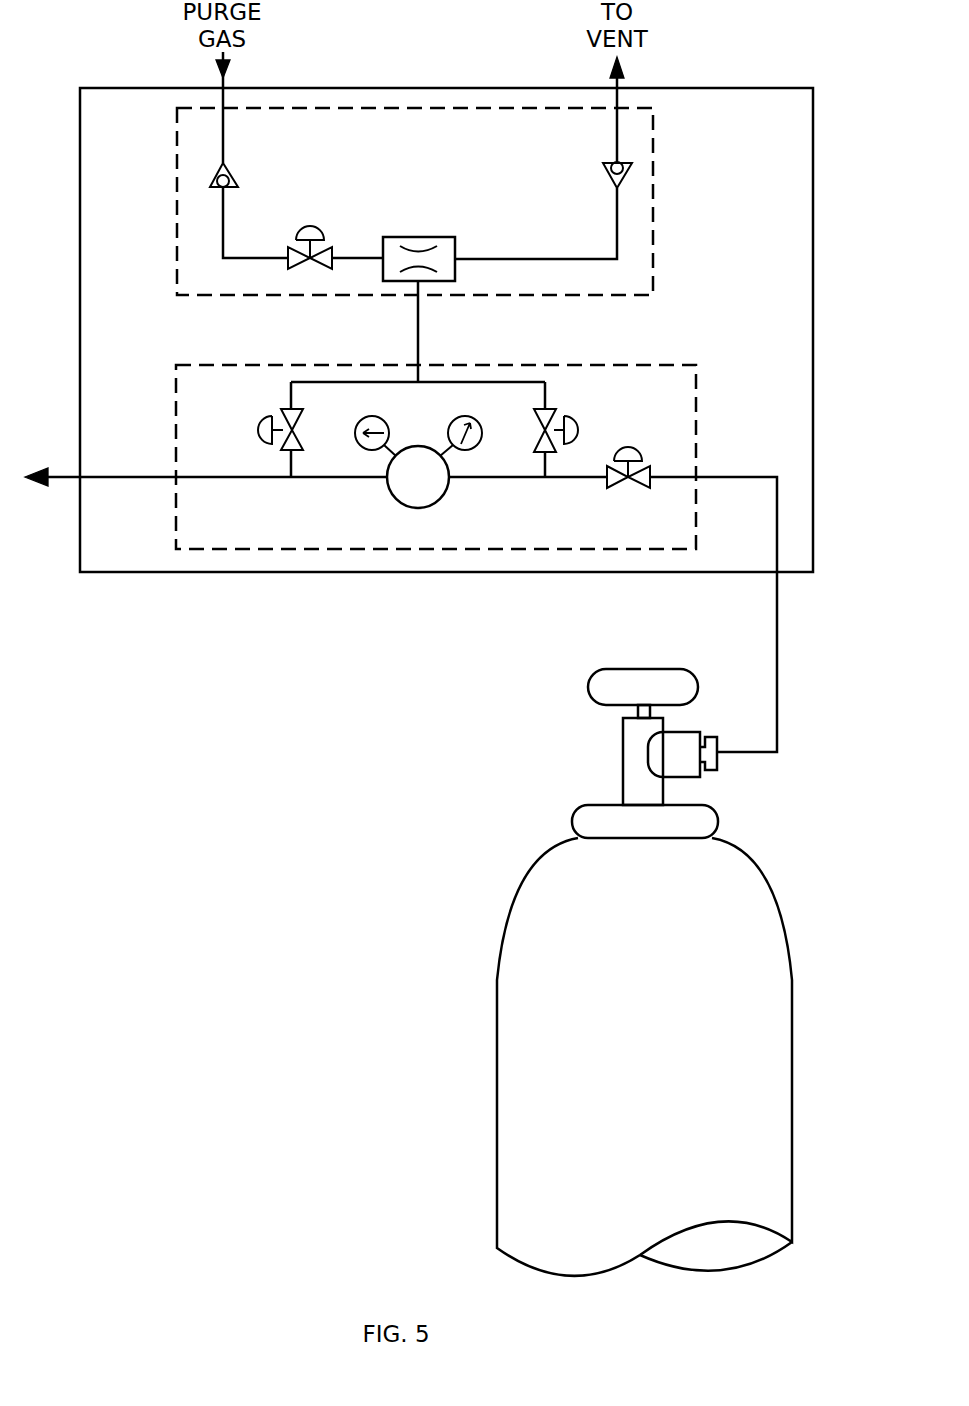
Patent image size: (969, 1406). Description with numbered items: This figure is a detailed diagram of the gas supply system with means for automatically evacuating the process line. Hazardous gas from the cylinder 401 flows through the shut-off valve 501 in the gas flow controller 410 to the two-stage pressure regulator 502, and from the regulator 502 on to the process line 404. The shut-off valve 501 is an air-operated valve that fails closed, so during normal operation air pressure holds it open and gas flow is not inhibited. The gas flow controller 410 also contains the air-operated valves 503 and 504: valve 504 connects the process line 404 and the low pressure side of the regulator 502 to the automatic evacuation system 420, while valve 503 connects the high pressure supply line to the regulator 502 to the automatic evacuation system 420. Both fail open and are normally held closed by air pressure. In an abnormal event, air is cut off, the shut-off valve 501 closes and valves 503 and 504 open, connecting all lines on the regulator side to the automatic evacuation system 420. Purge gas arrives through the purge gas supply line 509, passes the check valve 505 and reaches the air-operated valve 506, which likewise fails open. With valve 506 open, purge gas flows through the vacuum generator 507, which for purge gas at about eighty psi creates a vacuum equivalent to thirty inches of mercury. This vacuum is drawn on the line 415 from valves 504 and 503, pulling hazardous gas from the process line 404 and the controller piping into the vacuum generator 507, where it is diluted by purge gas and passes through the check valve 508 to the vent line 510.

The cylinder 401 is at (793, 1000).
The process line 404 is at (62, 479).
The gas flow controller 410 is at (698, 381).
The line 415 is at (422, 325).
The automatic evacuation system 420 is at (655, 212).
The shut-off valve 501 is at (626, 488).
The two-stage pressure regulator 502 is at (440, 500).
The air-operated valve 503 is at (537, 418).
The air-operated valve 504 is at (297, 418).
The check valve 505 is at (228, 168).
The air-operated valve 506 is at (312, 218).
The vacuum generator 507 is at (420, 238).
The check valve 508 is at (606, 172).
The purge gas supply line 509 is at (228, 72).
The vent line 510 is at (622, 70).